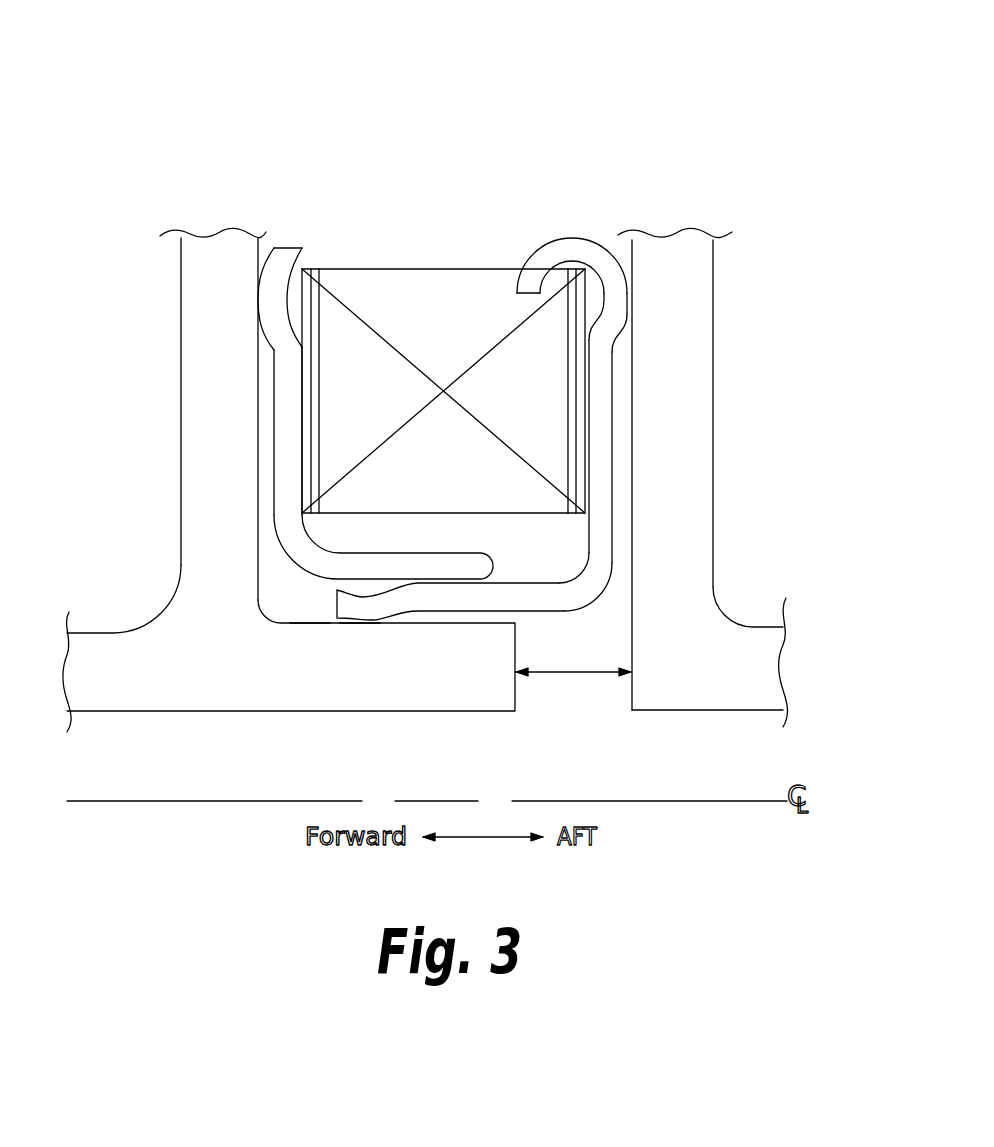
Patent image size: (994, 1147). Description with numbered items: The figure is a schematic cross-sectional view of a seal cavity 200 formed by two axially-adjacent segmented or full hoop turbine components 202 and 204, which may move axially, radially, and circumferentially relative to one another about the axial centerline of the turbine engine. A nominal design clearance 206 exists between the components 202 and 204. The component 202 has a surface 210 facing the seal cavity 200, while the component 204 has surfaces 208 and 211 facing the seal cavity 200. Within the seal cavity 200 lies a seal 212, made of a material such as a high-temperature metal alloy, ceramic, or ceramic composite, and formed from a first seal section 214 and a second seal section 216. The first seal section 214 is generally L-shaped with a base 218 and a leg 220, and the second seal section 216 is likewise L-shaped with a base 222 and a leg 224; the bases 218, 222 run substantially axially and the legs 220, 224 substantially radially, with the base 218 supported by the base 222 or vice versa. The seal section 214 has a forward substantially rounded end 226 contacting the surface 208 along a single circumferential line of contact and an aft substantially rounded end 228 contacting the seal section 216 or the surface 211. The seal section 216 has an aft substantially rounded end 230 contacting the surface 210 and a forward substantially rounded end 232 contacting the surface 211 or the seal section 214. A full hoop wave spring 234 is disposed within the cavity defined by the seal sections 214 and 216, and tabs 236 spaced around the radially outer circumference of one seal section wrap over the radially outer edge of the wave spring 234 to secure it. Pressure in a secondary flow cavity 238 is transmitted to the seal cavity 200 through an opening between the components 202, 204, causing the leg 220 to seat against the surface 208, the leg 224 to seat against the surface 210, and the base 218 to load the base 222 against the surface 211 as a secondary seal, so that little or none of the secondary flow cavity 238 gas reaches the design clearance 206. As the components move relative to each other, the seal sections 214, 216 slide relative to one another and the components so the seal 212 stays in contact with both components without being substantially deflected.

The seal cavity 200 is at (579, 95).
The turbine component 202 is at (717, 711).
The turbine component 204 is at (437, 712).
The nominal design clearance 206 is at (577, 673).
The surface 208 is at (262, 243).
The surface 210 is at (628, 246).
The surface 211 is at (299, 623).
The seal 212 is at (458, 218).
The first seal section 214 is at (274, 490).
The second seal section 216 is at (614, 433).
The base 218 is at (380, 551).
The leg 220 is at (274, 372).
The base 222 is at (530, 583).
The leg 224 is at (612, 353).
The forward substantially rounded end 226 is at (258, 306).
The aft substantially rounded end 228 is at (488, 583).
The aft substantially rounded end 230 is at (630, 273).
The forward substantially rounded end 232 is at (360, 623).
The full hoop wave spring 234 is at (366, 268).
The tabs 236 is at (533, 247).
The secondary flow cavity 238 is at (412, 31).